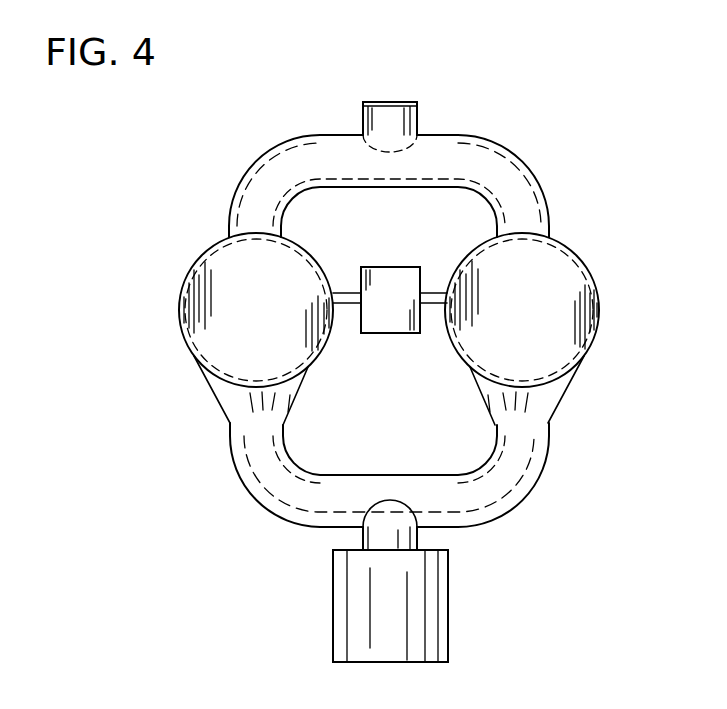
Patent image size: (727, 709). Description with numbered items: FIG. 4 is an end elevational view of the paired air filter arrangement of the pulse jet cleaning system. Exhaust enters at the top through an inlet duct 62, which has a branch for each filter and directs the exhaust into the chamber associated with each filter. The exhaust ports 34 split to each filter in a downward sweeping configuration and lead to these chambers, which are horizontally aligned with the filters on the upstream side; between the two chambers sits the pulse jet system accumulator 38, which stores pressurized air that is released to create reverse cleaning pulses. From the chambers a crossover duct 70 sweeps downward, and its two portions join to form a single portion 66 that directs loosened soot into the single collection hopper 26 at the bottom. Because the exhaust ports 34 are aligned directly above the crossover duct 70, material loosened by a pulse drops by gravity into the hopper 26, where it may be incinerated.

The hopper 26 is at (430, 635).
The exhaust ports 34 is at (512, 184).
The pulse jet system accumulator 38 is at (396, 328).
The inlet duct 62 is at (368, 122).
The single portion 66 is at (410, 537).
The crossover duct 70 is at (536, 444).